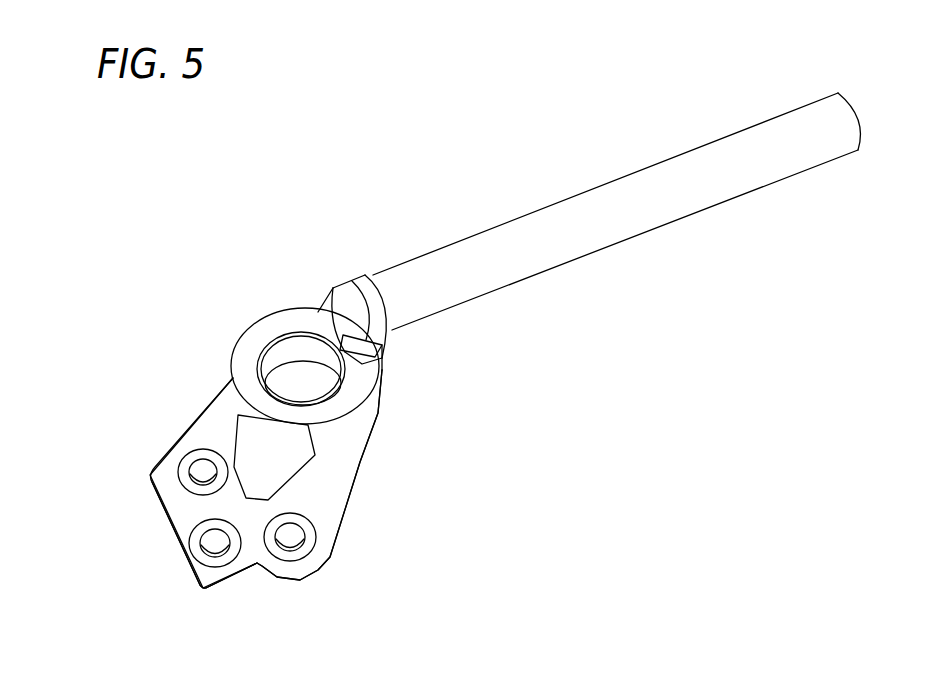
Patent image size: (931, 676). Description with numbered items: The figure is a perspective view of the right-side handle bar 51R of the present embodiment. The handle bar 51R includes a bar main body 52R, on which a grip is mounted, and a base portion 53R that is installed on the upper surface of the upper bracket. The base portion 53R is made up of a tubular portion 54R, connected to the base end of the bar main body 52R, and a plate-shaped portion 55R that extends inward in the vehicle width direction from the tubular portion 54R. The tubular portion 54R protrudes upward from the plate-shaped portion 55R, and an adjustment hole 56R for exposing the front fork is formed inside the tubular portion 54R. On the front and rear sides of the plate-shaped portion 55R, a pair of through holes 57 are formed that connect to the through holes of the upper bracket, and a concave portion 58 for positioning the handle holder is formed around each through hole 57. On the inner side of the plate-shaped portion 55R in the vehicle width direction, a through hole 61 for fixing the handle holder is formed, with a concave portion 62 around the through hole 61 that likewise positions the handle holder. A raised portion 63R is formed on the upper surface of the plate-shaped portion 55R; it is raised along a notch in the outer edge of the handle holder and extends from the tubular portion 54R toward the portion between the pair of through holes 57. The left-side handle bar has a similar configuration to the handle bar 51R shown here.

The handle bar 51R is at (242, 220).
The bar main body 52R is at (575, 210).
The base portion 53R is at (245, 328).
The tubular portion 54R is at (282, 303).
The plate-shaped portion 55R is at (148, 465).
The adjustment hole 56R is at (308, 303).
The through hole 57 is at (185, 455).
The concave portion 58 is at (195, 450).
The through hole 61 is at (202, 597).
The concave portion 62 is at (172, 570).
The raised portion 63R is at (238, 410).